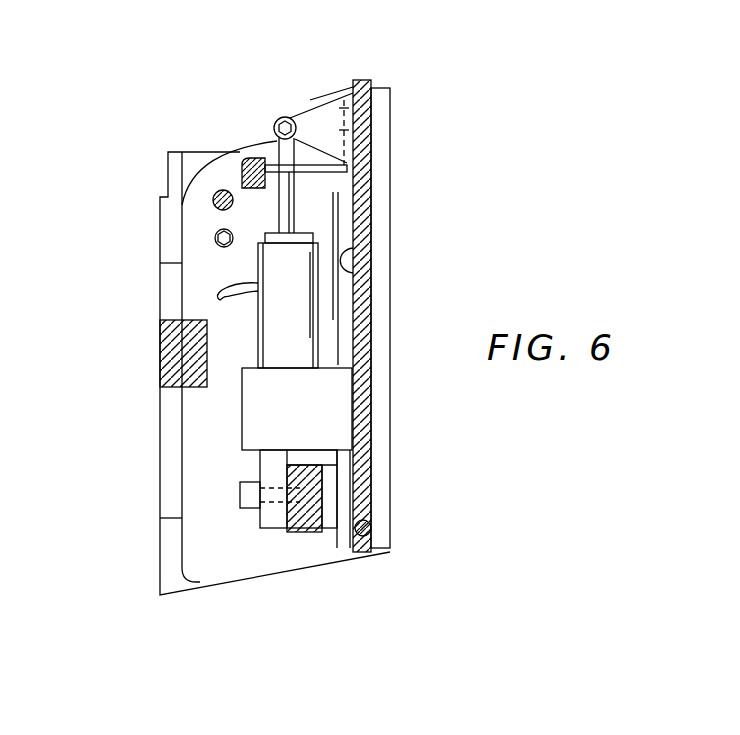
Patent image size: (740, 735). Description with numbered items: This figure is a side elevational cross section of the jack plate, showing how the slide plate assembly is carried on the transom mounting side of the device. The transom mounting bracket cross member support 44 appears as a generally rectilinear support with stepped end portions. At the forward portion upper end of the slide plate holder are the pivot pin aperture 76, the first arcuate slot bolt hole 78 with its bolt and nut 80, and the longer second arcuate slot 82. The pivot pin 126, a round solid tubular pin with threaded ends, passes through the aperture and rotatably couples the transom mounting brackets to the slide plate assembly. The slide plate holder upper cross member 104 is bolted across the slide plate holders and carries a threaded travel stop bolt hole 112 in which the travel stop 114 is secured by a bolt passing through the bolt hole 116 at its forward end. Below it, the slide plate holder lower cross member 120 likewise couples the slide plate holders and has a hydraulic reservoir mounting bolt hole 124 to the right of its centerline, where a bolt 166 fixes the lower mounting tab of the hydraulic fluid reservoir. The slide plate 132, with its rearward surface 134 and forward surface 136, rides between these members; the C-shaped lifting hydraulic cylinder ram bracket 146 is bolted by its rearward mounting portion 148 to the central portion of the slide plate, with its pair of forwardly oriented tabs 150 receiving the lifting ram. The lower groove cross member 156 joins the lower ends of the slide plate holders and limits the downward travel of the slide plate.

The transom mounting bracket cross member support 44 is at (162, 358).
The pivot pin aperture 76 is at (213, 157).
The first arcuate slot bolt hole 78 is at (212, 229).
The bolt and nut 80 is at (190, 252).
The second arcuate slot 82 is at (222, 293).
The slide plate holder upper cross member 104 is at (250, 156).
The threaded travel stop bolt hole 112 is at (284, 198).
The travel stop 114 is at (390, 162).
The bolt hole 116 is at (286, 179).
The slide plate holder lower cross member 120 is at (320, 493).
The hydraulic reservoir mounting bolt hole 124 is at (298, 532).
The pivot pin 126 is at (196, 199).
The slide plate 132 is at (390, 302).
The rearward surface 134 is at (374, 350).
The forward surface 136 is at (390, 259).
The lifting hydraulic cylinder ram bracket 146 is at (310, 131).
The rearward mounting portion 148 is at (390, 90).
The forwardly oriented tabs 150 is at (287, 117).
The lower groove cross member 156 is at (364, 545).
The bolt 166 is at (240, 492).